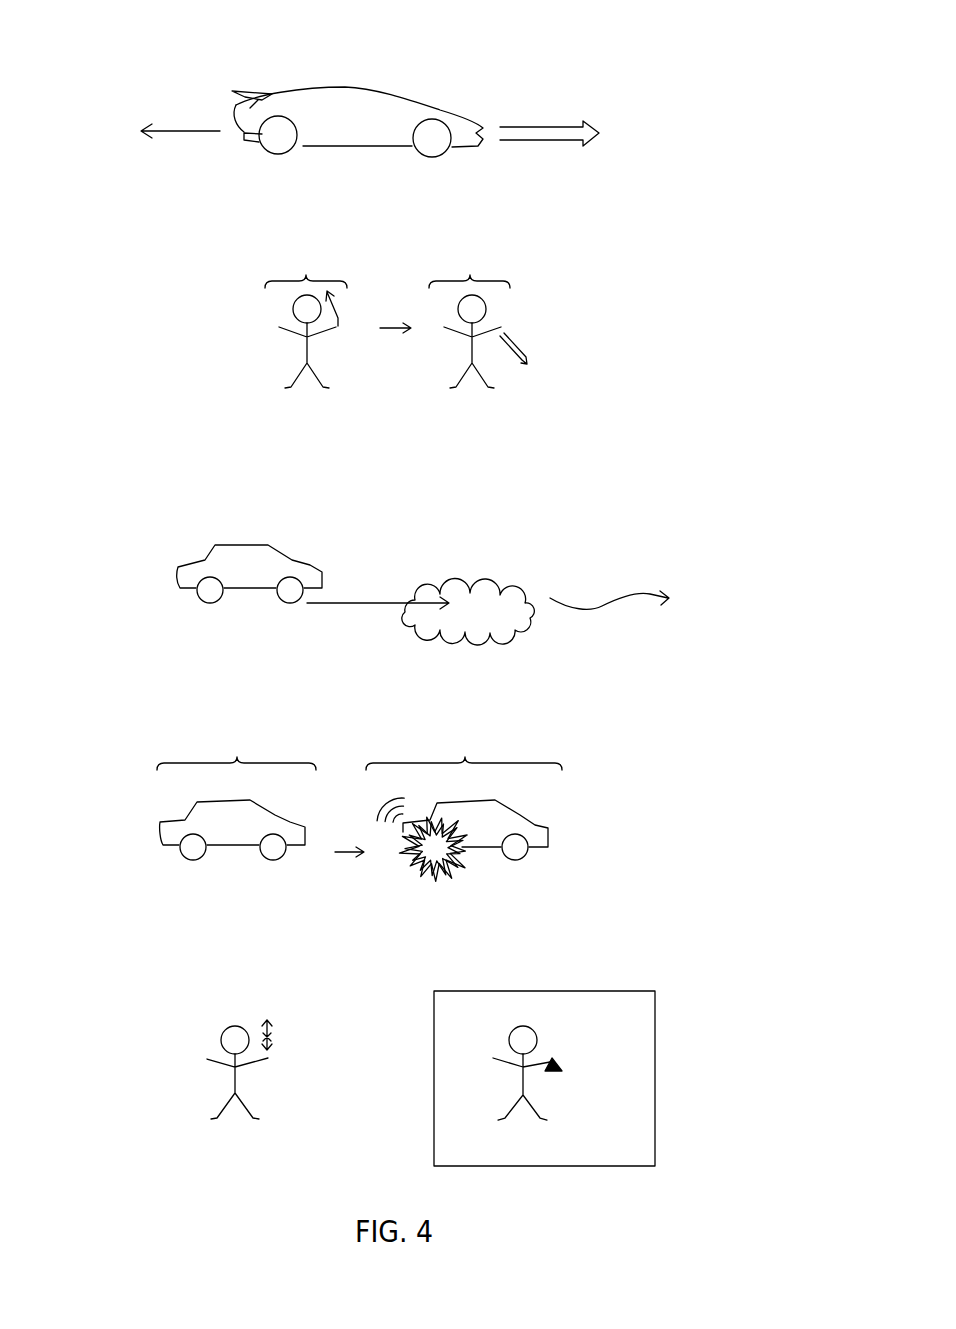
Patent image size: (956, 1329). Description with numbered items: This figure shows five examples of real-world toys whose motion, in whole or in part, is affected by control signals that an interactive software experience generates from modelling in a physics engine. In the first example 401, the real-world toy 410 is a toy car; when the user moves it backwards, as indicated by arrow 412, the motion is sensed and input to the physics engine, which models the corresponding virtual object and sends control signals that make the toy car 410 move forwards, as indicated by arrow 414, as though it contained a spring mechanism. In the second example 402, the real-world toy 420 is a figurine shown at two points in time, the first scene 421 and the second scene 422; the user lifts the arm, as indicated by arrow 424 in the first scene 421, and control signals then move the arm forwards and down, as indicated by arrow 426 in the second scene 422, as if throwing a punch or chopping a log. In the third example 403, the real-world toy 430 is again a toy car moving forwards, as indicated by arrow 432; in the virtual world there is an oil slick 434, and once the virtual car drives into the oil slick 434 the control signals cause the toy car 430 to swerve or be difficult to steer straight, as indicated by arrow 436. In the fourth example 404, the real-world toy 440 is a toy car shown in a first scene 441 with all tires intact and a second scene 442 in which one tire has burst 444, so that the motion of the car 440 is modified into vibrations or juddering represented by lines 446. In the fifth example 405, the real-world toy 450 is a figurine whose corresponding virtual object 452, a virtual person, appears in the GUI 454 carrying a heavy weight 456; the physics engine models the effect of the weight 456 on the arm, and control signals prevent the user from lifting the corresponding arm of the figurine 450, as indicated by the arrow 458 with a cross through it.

The first example 401 is at (325, 99).
The second example 402 is at (315, 346).
The third example 403 is at (359, 567).
The fourth example 404 is at (306, 799).
The fifth example 405 is at (385, 1061).
The real-world toy 410 is at (384, 91).
The arrow 412 is at (168, 133).
The arrow 414 is at (540, 141).
The real-world toy 420 is at (307, 395).
The first scene 421 is at (334, 314).
The second scene 422 is at (504, 314).
The arrow 424 is at (338, 303).
The arrow 426 is at (519, 345).
The real-world toy 430 is at (261, 545).
The arrow 432 is at (366, 603).
The oil slick 434 is at (488, 633).
The arrow 436 is at (597, 605).
The real-world toy 440 is at (261, 825).
The first scene 441 is at (241, 793).
The second scene 442 is at (454, 821).
The burst tire 444 is at (420, 872).
The lines representing vibrations 446 is at (406, 799).
The real-world toy 450 is at (248, 1128).
The virtual object 452 is at (537, 1035).
The GUI 454 is at (657, 1065).
The heavy weight 456 is at (565, 1070).
The arrow with a cross through it 458 is at (273, 1036).